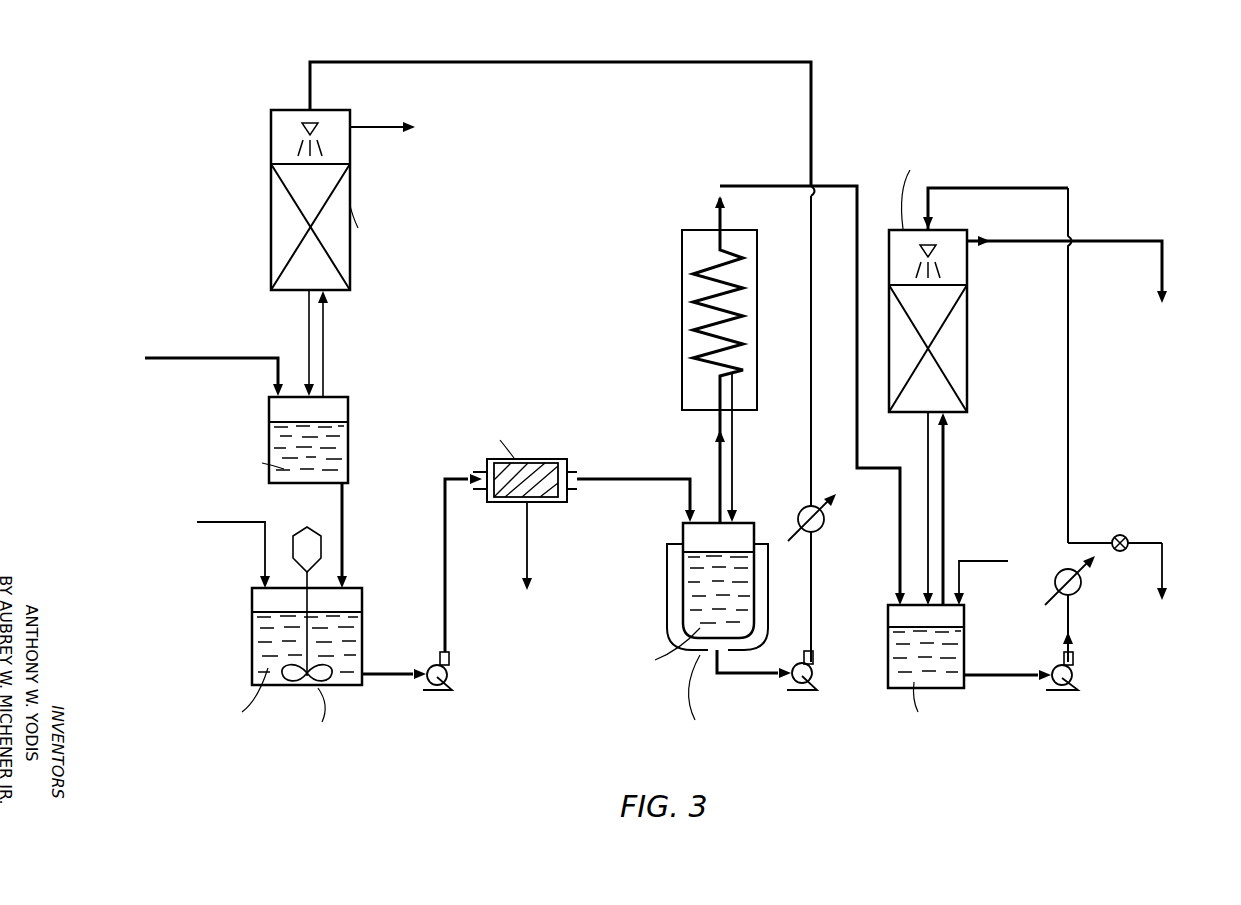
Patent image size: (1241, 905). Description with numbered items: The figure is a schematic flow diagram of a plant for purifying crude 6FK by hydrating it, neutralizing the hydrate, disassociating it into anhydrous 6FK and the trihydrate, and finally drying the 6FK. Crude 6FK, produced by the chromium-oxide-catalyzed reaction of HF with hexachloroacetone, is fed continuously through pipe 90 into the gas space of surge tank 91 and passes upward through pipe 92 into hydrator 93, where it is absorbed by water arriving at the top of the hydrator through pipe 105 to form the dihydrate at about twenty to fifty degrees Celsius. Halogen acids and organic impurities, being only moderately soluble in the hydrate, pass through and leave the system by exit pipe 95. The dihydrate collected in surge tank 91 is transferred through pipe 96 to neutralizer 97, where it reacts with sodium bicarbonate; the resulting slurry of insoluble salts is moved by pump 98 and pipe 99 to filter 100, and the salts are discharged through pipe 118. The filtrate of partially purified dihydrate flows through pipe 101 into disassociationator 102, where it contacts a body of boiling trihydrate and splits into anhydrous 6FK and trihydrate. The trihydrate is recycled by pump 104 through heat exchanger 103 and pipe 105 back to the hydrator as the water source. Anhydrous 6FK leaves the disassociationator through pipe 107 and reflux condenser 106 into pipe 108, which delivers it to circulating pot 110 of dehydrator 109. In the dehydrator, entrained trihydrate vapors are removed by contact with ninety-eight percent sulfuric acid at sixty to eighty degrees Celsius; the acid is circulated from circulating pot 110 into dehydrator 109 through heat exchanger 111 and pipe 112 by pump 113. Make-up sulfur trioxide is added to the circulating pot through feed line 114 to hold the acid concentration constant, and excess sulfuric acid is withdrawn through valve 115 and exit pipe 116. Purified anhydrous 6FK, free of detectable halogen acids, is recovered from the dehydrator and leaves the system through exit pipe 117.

The pipe 90 is at (230, 356).
The surge tank 91 is at (350, 452).
The pipe 92 is at (325, 368).
The hydrator 93 is at (352, 262).
The exit pipe 95 is at (372, 132).
The pipe 96 is at (345, 556).
The neutralizer 97 is at (364, 642).
The pump 98 is at (450, 684).
The pipe 99 is at (447, 580).
The filter 100 is at (544, 460).
The pipe 101 is at (658, 486).
The disassociationator 102 is at (668, 592).
The heat exchanger 103 is at (822, 530).
The pump 104 is at (817, 668).
The pipe 105 is at (460, 62).
The reflux condenser 106 is at (682, 288).
The pipe 107 is at (716, 460).
The pipe 108 is at (786, 185).
The dehydrator 109 is at (968, 352).
The circulating pot 110 is at (966, 662).
The heat exchanger 111 is at (1082, 588).
The pipe 112 is at (1070, 462).
The pump 113 is at (1075, 680).
The feed line 114 is at (962, 560).
The valve 115 is at (1121, 535).
The exit pipe 116 is at (1165, 568).
The exit pipe 117 is at (1110, 240).
The pipe 118 is at (530, 566).